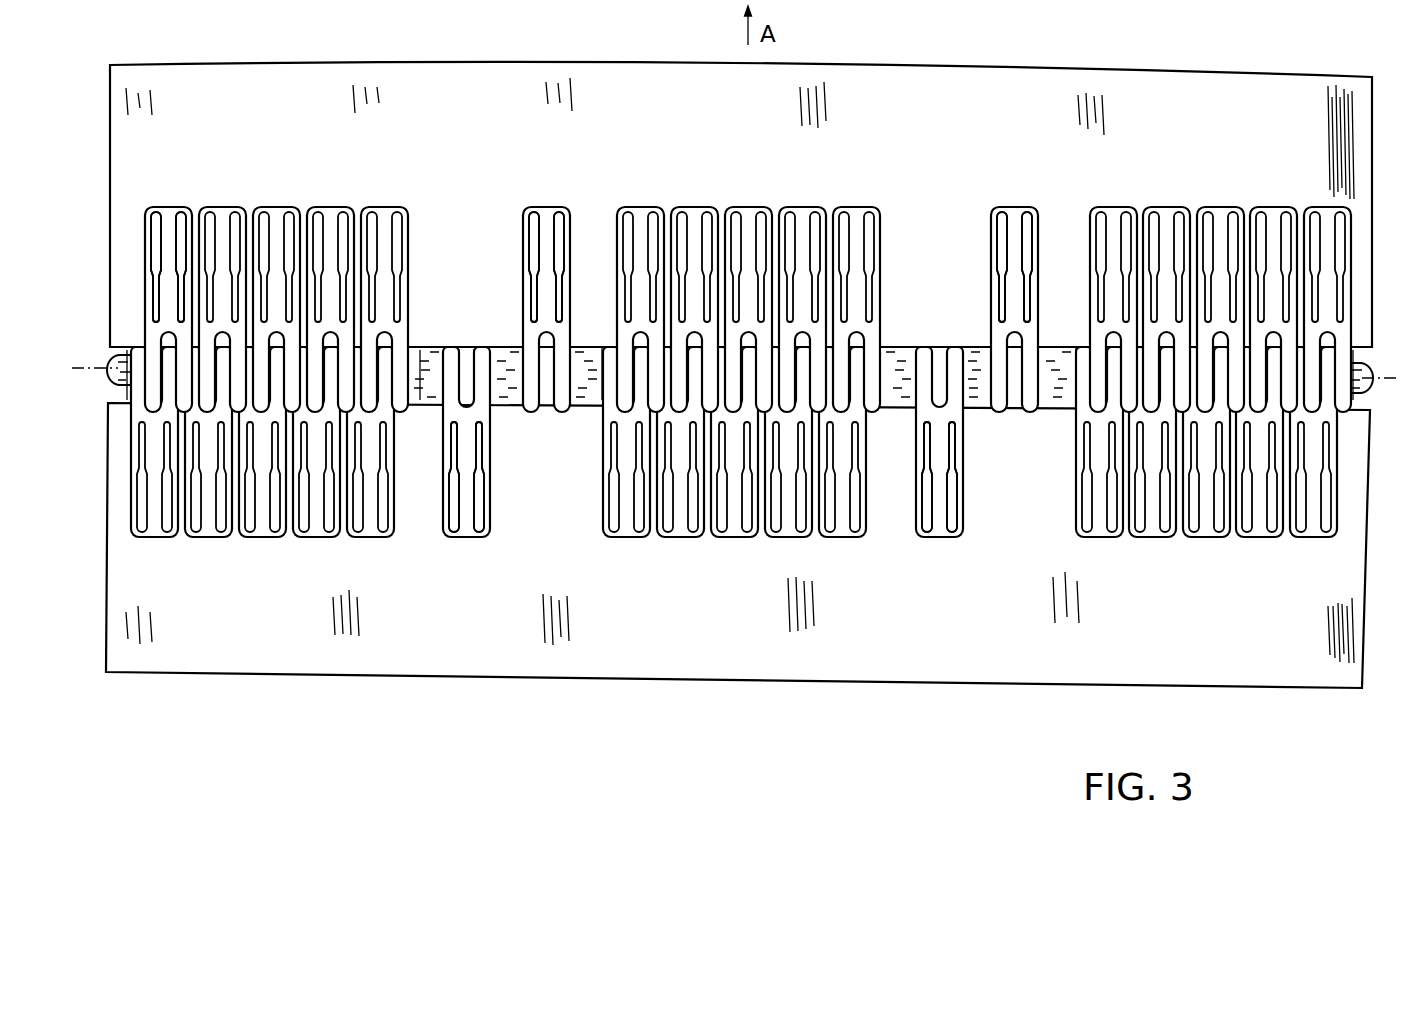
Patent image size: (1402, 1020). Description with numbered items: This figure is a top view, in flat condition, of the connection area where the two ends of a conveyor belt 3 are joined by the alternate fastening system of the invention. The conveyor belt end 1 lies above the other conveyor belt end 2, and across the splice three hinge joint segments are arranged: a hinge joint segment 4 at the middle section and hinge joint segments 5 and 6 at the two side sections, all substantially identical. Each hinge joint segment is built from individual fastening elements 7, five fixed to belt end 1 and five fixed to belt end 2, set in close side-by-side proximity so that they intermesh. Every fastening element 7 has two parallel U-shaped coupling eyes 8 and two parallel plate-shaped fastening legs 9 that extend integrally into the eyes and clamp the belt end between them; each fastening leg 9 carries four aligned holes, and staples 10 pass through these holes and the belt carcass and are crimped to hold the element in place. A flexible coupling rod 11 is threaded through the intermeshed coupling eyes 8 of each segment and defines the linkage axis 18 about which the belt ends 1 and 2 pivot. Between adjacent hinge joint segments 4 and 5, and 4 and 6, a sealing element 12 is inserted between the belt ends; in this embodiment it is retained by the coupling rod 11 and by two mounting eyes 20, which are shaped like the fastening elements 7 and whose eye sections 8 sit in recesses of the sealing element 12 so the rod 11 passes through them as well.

The conveyor belt end 1 is at (1350, 148).
The conveyor belt end 2 is at (1355, 612).
The conveyor belt 3 is at (721, 358).
The hinge joint segment 4 is at (764, 198).
The hinge joint segment 5 is at (276, 275).
The hinge joint segment 6 is at (1192, 196).
The fastening element 7 is at (269, 190).
The coupling eye 8 is at (532, 398).
The fastening leg 9 is at (490, 470).
The staple 10 is at (947, 515).
The coupling rod 11 is at (1353, 390).
The sealing element 12 is at (977, 395).
The linkage axis 18 is at (1380, 378).
The mounting eye 20 is at (512, 223).